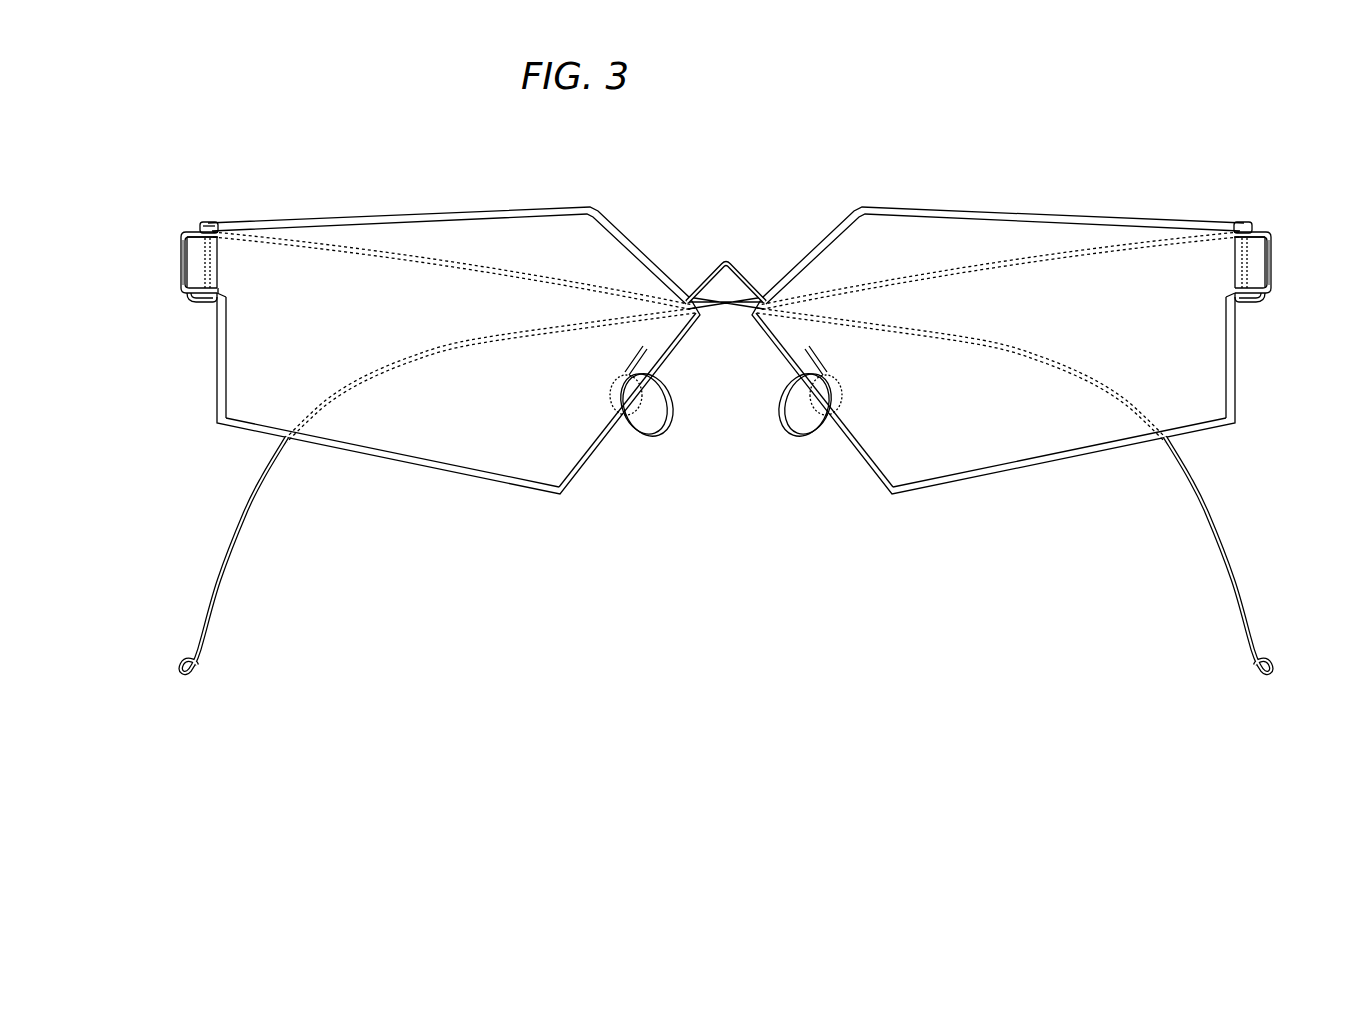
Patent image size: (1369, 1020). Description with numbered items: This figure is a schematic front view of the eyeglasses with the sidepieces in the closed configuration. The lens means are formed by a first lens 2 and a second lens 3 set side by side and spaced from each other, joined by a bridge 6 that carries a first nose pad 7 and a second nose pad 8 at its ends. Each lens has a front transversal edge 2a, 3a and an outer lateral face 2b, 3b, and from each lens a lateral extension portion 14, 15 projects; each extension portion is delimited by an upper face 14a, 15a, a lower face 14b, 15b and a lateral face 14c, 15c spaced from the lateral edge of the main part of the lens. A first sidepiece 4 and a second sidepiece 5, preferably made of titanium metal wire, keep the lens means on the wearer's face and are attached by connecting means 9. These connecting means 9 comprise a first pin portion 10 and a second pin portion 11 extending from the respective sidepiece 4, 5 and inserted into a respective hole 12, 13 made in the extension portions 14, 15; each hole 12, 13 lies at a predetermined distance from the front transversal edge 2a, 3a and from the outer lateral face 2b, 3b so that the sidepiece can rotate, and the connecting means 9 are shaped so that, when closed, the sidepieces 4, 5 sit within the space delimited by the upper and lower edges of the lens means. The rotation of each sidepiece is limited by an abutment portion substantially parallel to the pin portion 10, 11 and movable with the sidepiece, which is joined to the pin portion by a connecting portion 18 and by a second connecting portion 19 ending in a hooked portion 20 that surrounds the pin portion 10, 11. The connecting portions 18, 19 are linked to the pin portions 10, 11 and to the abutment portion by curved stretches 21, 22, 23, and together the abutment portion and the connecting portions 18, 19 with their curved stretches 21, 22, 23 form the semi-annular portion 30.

The first lens 2 is at (473, 448).
The front transversal edge 2a is at (413, 428).
The outer lateral face 2b is at (188, 287).
The second lens 3 is at (970, 447).
The front transversal edge 3a is at (1050, 432).
The outer lateral face 3b is at (1278, 285).
The first sidepiece 4 is at (1231, 557).
The second sidepiece 5 is at (220, 580).
The bridge 6 is at (724, 260).
The first nose pad 7 is at (645, 442).
The second nose pad 8 is at (797, 442).
The connecting means 9 is at (175, 222).
The first pin portion 10 is at (222, 260).
The second pin portion 11 is at (1238, 259).
The hole 12 is at (238, 232).
The hole 13 is at (1238, 222).
The extension portion 14 is at (192, 300).
The upper face 14a is at (192, 231).
The lower face 14b is at (182, 266).
The lateral face 14c is at (201, 305).
The extension portion 15 is at (1258, 302).
The upper face 15a is at (1273, 227).
The lower face 15b is at (1275, 266).
The lateral face 15c is at (1253, 302).
The connecting portion 18 is at (200, 302).
The second connecting portion 19 is at (200, 228).
The hooked portion 20 is at (207, 232).
The curved stretch 21 is at (208, 313).
The curved stretch 22 is at (183, 297).
The curved stretch 23 is at (188, 237).
The semi-annular portion 30 is at (170, 253).